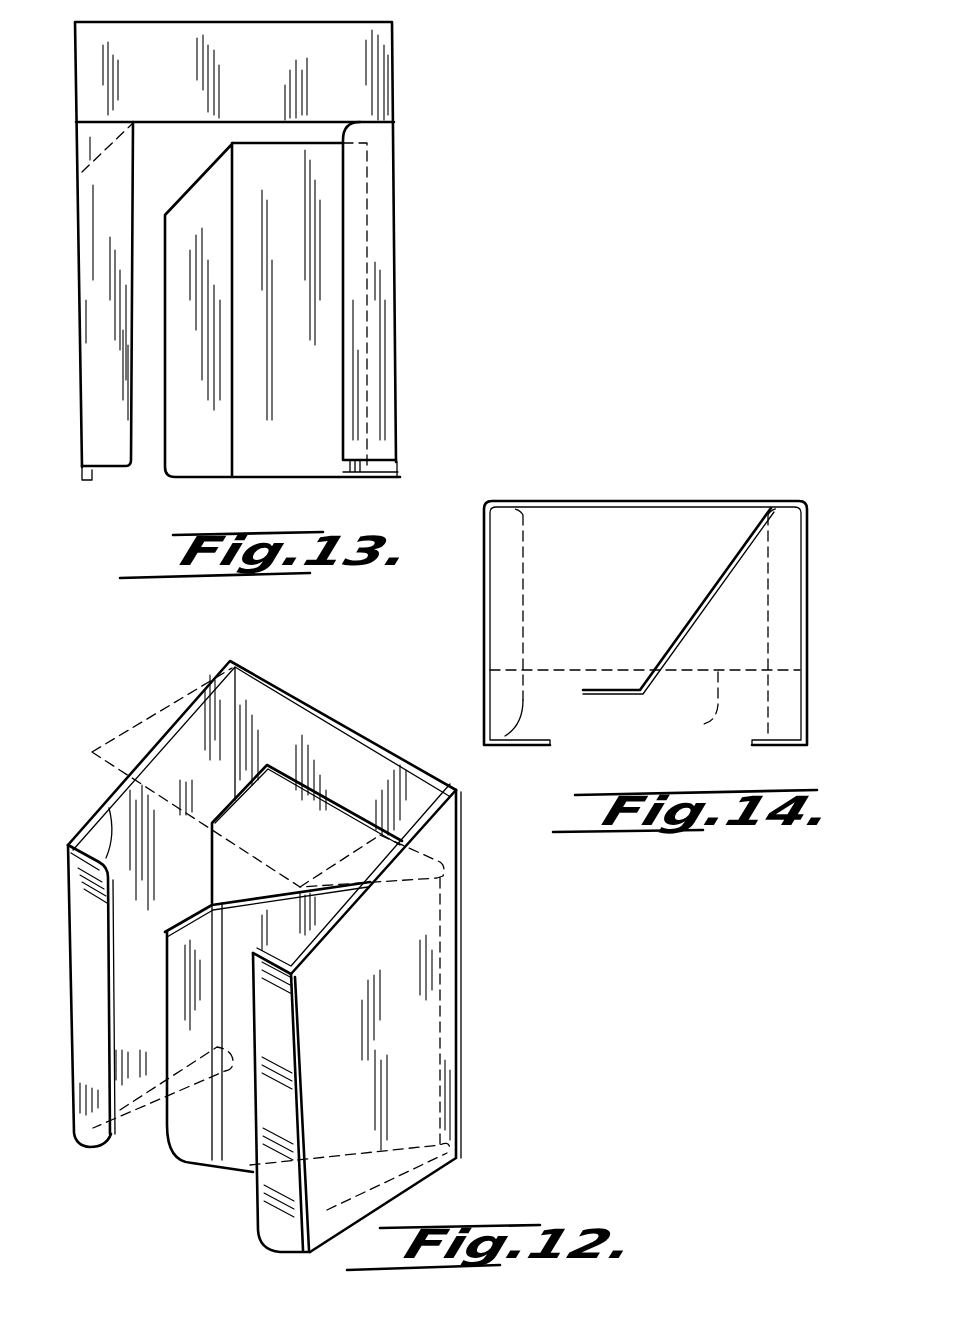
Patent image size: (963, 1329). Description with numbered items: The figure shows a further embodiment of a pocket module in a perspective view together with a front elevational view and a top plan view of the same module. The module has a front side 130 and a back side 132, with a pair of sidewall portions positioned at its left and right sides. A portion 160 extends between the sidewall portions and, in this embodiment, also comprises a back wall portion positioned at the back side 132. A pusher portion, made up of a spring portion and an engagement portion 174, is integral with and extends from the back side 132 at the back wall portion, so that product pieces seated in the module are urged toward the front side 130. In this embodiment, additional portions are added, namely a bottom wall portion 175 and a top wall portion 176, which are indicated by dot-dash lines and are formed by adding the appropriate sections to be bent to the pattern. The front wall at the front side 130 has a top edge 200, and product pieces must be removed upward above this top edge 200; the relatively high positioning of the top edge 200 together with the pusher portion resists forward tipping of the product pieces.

In FIG. 13, the front side 130 is at (115, 470).
In FIG. 14, the front side 130 is at (763, 742).
In FIG. 12, the front side 130 is at (90, 1128).
In FIG. 14, the back side 132 is at (700, 500).
In FIG. 12, the back side 132 is at (460, 818).
In FIG. 12, the portion extending between the sidewall portions 160 is at (310, 728).
In FIG. 13, the engagement portion 174 is at (197, 443).
In FIG. 12, the engagement portion 174 is at (200, 1130).
In FIG. 14, the bottom wall portion 175 is at (523, 702).
In FIG. 12, the bottom wall portion 175 is at (150, 1130).
In FIG. 14, the top wall portion 176 is at (686, 704).
In FIG. 12, the top wall portion 176 is at (160, 710).
In FIG. 12, the top edge 200 is at (108, 804).